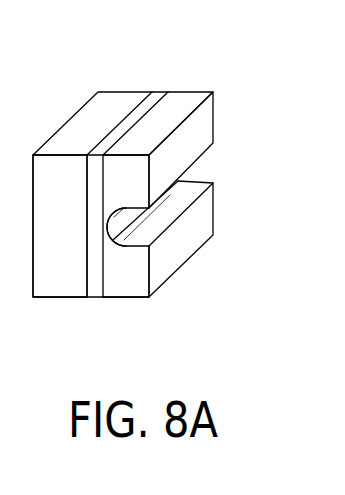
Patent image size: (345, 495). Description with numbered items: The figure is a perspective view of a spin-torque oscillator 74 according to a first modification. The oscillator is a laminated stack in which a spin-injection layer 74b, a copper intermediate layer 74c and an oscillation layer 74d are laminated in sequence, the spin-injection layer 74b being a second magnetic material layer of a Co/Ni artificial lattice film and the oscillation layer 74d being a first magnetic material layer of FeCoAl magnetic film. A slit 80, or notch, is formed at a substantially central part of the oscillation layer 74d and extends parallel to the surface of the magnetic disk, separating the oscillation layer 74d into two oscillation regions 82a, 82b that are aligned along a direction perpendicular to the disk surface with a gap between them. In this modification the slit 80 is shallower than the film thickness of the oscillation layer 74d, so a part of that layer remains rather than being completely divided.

The spin-torque oscillator 74 is at (154, 185).
The spin-injection layer 74b is at (55, 285).
The intermediate layer 74c is at (98, 283).
The oscillation layer 74d is at (130, 283).
The slit 80 is at (200, 172).
The oscillation region 82a is at (182, 252).
The oscillation region 82b is at (203, 132).